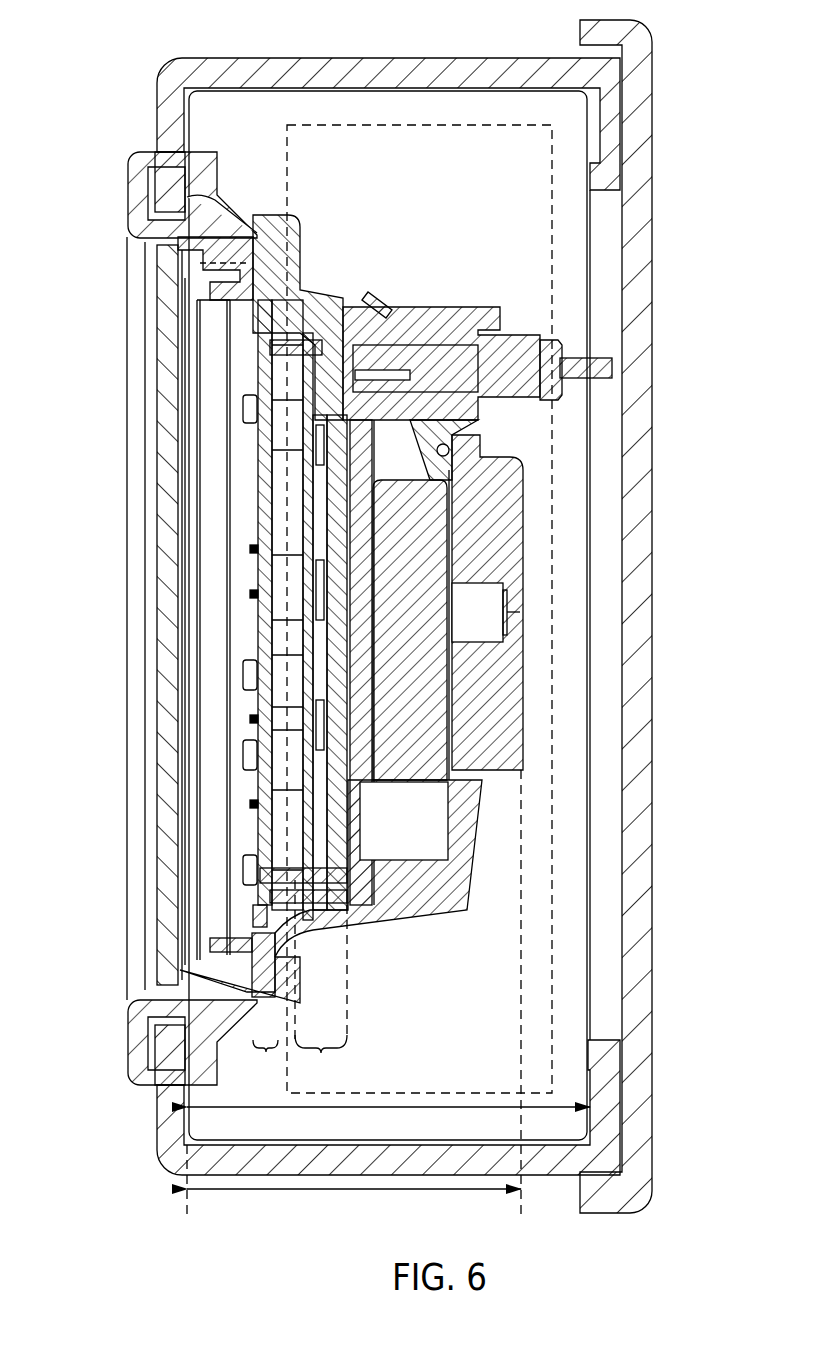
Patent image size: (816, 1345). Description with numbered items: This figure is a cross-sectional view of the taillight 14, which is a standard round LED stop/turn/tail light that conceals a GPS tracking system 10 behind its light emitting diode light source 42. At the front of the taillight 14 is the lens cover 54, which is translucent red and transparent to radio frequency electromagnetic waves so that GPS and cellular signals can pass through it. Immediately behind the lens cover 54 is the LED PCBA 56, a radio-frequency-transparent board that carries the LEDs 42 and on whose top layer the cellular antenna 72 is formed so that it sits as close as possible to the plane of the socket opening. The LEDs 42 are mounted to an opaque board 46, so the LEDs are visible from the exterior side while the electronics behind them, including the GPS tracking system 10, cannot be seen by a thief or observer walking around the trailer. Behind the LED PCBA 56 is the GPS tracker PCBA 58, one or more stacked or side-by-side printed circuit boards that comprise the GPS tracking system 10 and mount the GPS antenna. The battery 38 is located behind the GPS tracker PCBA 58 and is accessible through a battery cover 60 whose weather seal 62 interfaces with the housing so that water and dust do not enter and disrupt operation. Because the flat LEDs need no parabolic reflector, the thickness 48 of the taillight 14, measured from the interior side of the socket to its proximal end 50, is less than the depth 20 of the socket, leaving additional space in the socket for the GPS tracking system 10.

The GPS tracking system 10 is at (386, 125).
The taillight 14 is at (100, 722).
The depth 20 is at (445, 1107).
The battery 38 is at (417, 740).
The light emitting diode light source 42 is at (240, 410).
The opaque board 46 is at (258, 522).
The thickness 48 is at (323, 1191).
The proximal end 50 is at (508, 655).
The lens cover 54 is at (377, 402).
The LED PCBA 56 is at (265, 1056).
The GPS tracker PCBA 58 is at (321, 976).
The battery cover 60 is at (497, 480).
The weather seal 62 is at (447, 448).
The cellular antenna 72 is at (280, 387).